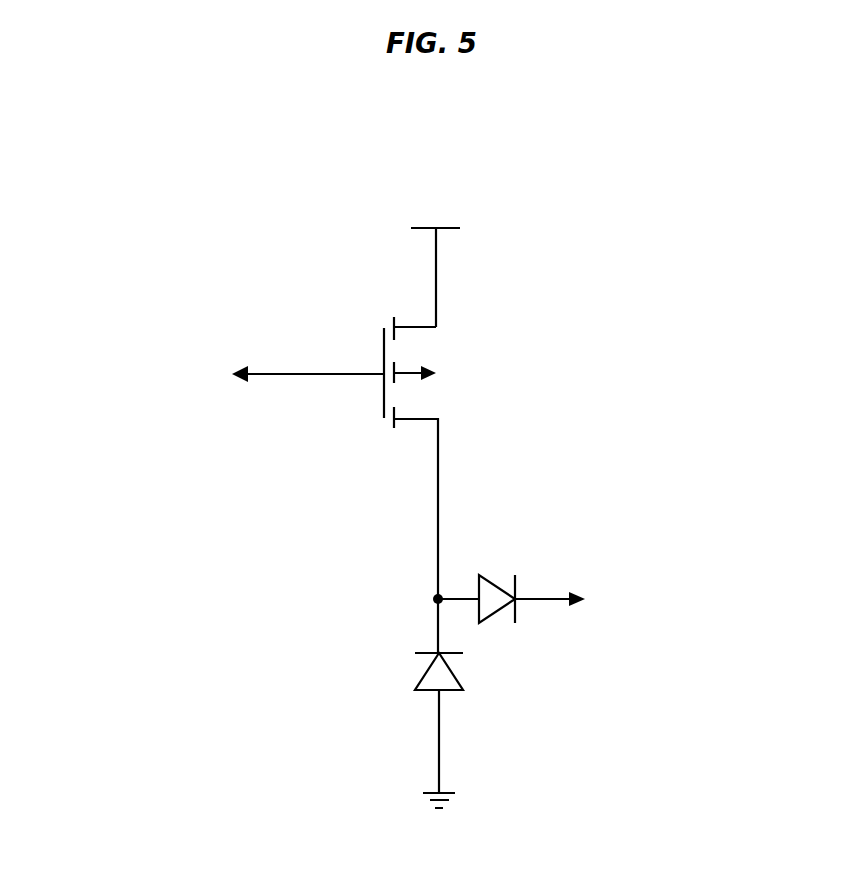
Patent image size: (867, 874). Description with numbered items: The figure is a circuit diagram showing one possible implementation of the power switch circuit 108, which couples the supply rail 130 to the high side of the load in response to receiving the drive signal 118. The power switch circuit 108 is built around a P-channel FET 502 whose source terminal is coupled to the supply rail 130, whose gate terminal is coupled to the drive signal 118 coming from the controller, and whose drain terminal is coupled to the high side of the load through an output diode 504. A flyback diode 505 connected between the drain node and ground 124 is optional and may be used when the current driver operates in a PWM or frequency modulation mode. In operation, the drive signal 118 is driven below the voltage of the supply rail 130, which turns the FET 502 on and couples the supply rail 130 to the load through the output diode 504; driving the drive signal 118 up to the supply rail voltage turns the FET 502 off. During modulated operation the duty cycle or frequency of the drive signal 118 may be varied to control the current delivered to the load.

The power switch circuit 108 is at (568, 143).
The supply rail 130 is at (436, 250).
The FET 502 is at (384, 352).
The drive signal 118 is at (300, 374).
The output diode 504 is at (492, 575).
The flyback diode 505 is at (455, 678).
The ground 124 is at (439, 740).